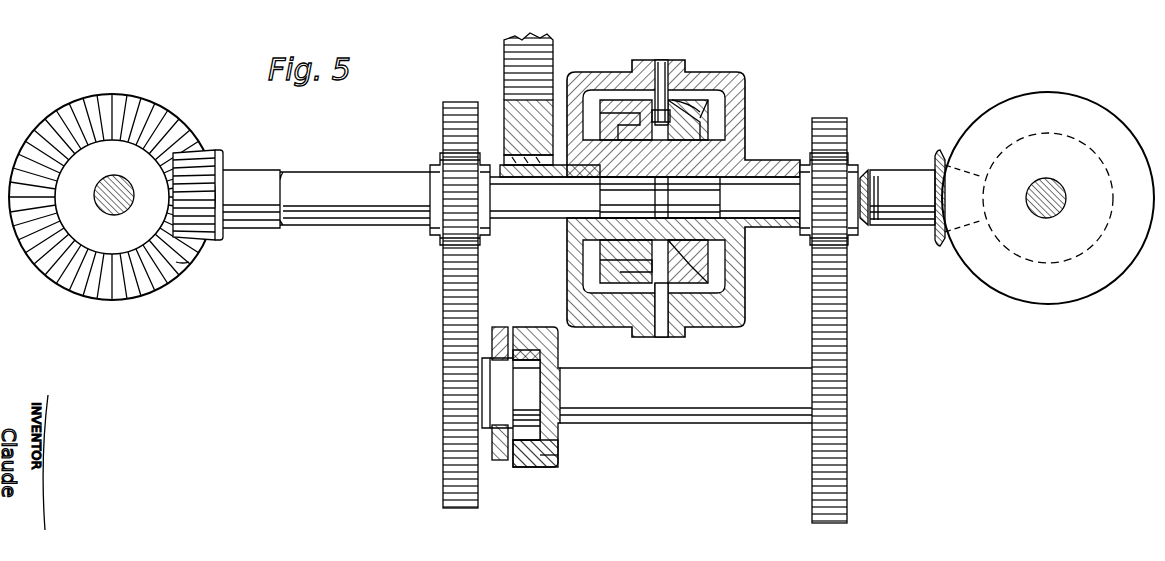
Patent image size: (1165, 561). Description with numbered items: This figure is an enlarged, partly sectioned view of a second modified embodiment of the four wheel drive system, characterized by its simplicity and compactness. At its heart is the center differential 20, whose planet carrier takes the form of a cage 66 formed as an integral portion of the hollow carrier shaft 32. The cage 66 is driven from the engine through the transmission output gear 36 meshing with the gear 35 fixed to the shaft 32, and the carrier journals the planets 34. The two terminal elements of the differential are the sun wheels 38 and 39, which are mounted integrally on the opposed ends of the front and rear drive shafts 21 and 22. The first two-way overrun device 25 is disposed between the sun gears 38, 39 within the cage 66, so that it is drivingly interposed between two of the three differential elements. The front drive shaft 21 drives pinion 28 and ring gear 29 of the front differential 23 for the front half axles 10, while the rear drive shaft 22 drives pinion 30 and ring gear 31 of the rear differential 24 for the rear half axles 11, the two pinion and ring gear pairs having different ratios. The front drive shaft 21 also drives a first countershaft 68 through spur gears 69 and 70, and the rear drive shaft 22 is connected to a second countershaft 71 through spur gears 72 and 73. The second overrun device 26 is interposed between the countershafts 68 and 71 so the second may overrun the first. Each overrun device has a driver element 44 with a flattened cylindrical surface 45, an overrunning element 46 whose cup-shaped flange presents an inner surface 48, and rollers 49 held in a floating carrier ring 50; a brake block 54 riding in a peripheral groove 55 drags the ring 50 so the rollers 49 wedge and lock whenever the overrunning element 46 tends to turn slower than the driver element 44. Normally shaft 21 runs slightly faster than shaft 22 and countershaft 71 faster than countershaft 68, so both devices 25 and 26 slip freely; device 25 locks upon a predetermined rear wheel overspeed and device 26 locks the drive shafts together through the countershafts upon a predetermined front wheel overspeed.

The front live half axles 10 is at (118, 212).
The rear live half axles 11 is at (1050, 186).
The center differential 20 is at (690, 82).
The front drive shaft 21 is at (336, 226).
The rear drive shaft 22 is at (876, 222).
The front differential 23 is at (178, 108).
The rear differential 24 is at (978, 295).
The first two-way overrun device 25 is at (692, 135).
The second overrun device 26 is at (520, 482).
The front pinion 28 is at (210, 235).
The front ring gear 29 is at (188, 258).
The rear pinion 30 is at (940, 158).
The rear ring gear 31 is at (980, 122).
The planet carrier shaft 32 is at (503, 166).
The planets 34 is at (688, 312).
The gear 35 is at (508, 112).
The transmission output gear 36 is at (503, 55).
The first sun wheel 38 is at (590, 298).
The second sun wheel 39 is at (706, 282).
The driver element 44 is at (537, 385).
The cylindrical surface 45 is at (516, 423).
The overrunning element 46 is at (548, 456).
The inner cylindrical surface 48 is at (542, 463).
The rollers 49 is at (528, 436).
The carrier ring 50 is at (502, 328).
The brake block 54 is at (700, 101).
The peripheral groove 55 is at (500, 462).
The cage 66 is at (583, 78).
The first countershaft 68 is at (485, 356).
The spur gear 69 is at (445, 270).
The spur gear 70 is at (445, 300).
The second countershaft 71 is at (720, 368).
The spur gear 72 is at (846, 260).
The spur gear 73 is at (846, 290).